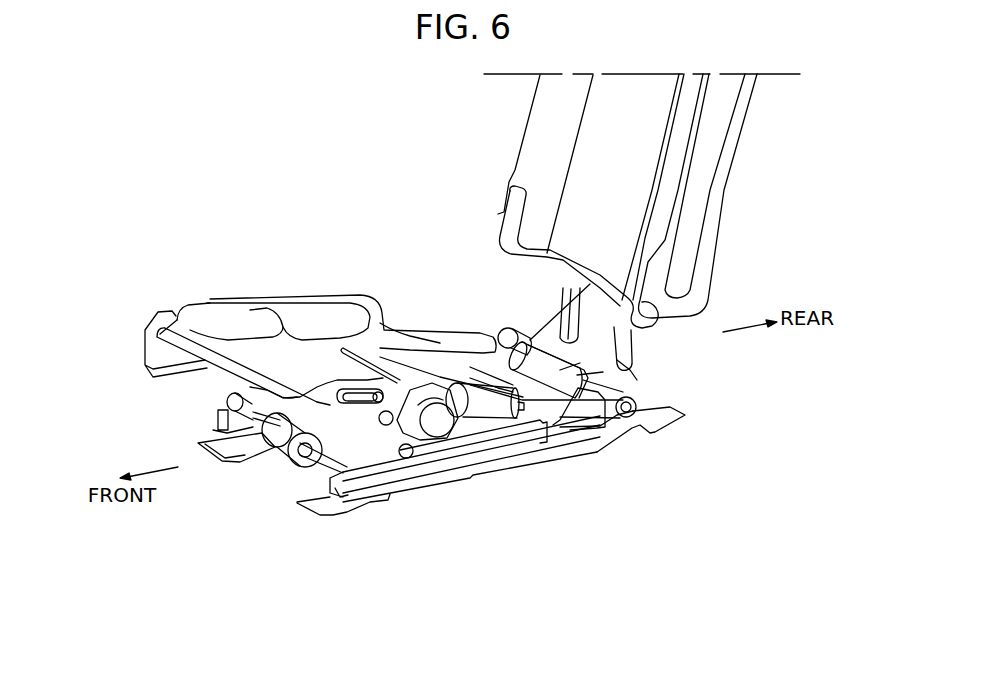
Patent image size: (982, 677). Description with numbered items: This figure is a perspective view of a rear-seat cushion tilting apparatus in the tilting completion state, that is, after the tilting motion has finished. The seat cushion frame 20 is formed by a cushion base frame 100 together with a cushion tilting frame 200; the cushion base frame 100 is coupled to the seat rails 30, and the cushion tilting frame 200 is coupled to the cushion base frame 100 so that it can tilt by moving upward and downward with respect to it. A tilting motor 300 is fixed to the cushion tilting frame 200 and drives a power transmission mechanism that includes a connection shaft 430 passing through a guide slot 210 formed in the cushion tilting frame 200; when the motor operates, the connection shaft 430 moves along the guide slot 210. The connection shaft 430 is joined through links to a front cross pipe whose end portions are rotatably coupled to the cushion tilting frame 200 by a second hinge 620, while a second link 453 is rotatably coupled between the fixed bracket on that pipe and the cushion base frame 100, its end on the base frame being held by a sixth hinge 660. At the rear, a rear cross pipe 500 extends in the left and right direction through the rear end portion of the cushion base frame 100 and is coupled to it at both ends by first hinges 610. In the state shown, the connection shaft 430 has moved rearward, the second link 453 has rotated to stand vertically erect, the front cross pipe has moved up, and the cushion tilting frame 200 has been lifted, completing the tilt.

The seat cushion frame 20 is at (465, 225).
The seat rails 30 is at (503, 467).
The cushion base frame 100 is at (463, 350).
The cushion tilting frame 200 is at (440, 343).
The guide slot 210 is at (340, 392).
The tilting motor 300 is at (435, 427).
The connection shaft 430 is at (375, 393).
The second link 453 is at (387, 427).
The rear cross pipe 500 is at (603, 390).
The first hinges 610 is at (637, 418).
The second hinge 620 is at (300, 455).
The sixth hinge 660 is at (408, 458).